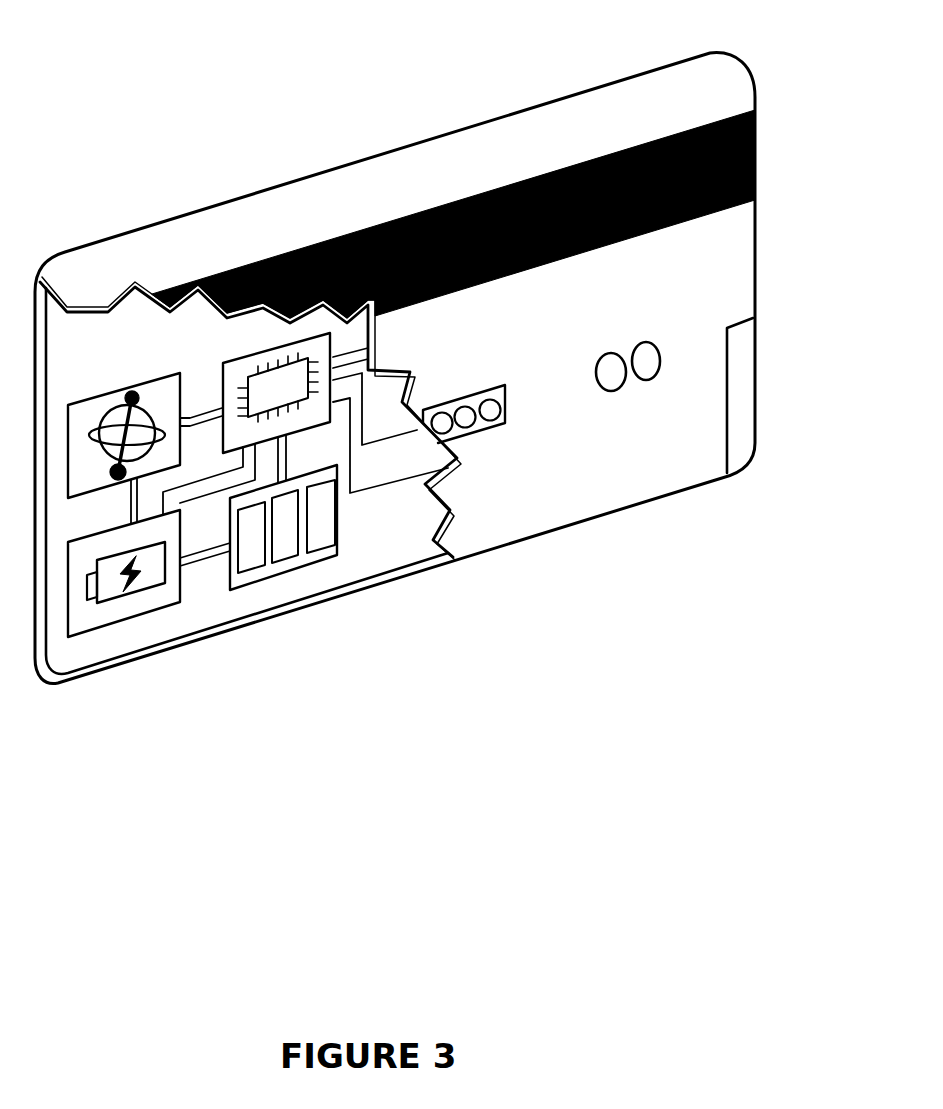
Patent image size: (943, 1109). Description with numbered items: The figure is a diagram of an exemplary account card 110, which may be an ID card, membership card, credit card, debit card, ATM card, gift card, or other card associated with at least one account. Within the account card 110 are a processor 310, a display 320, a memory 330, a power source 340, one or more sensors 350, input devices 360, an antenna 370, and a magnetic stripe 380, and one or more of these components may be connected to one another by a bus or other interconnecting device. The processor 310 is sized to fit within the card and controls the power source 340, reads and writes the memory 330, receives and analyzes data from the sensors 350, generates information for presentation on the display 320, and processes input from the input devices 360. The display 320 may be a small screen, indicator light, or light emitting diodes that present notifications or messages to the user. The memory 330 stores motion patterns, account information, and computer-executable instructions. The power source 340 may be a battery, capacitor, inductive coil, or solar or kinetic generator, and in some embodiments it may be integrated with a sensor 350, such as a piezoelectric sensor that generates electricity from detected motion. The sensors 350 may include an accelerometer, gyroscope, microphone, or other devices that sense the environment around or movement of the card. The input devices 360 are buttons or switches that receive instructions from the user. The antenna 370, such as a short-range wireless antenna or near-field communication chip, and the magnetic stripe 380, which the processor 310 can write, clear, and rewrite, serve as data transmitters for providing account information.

The account card 110 is at (547, 85).
The processor 310 is at (247, 345).
The display 320 is at (493, 438).
The memory 330 is at (282, 582).
The power source 340 is at (142, 622).
The sensors 350 is at (125, 382).
The input devices 360 is at (655, 333).
The antenna 370 is at (757, 380).
The magnetic stripe 380 is at (763, 168).